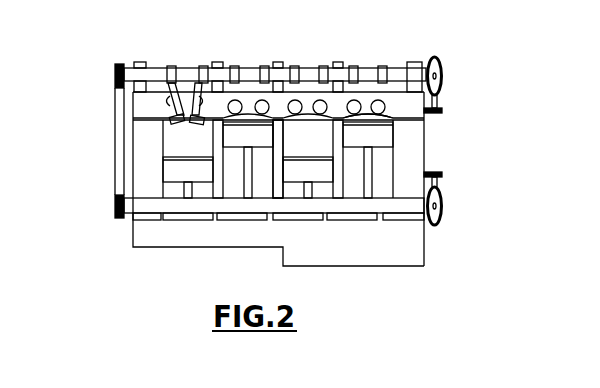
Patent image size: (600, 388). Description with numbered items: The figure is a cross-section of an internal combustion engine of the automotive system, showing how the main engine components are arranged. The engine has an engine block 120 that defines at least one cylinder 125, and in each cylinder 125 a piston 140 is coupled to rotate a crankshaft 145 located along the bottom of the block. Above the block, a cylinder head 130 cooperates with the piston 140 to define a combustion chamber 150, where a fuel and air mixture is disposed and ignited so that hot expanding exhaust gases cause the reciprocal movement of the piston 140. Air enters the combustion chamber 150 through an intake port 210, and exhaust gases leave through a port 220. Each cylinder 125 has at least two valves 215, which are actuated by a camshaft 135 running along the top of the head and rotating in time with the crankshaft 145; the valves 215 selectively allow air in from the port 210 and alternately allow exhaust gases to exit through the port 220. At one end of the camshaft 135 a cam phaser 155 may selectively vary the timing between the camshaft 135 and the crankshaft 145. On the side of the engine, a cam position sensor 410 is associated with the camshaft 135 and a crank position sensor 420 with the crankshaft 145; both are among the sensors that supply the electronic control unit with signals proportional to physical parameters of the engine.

The engine block 120 is at (133, 156).
The cylinder 125 is at (282, 148).
The cylinder head 130 is at (133, 115).
The camshaft 135 is at (185, 67).
The piston 140 is at (312, 168).
The crankshaft 145 is at (158, 209).
The combustion chamber 150 is at (368, 117).
The cam phaser 155 is at (115, 71).
The intake port 210 is at (298, 102).
The valves 215 is at (168, 108).
The exhaust port 220 is at (257, 101).
The cam position sensor 410 is at (441, 111).
The crank position sensor 420 is at (440, 173).